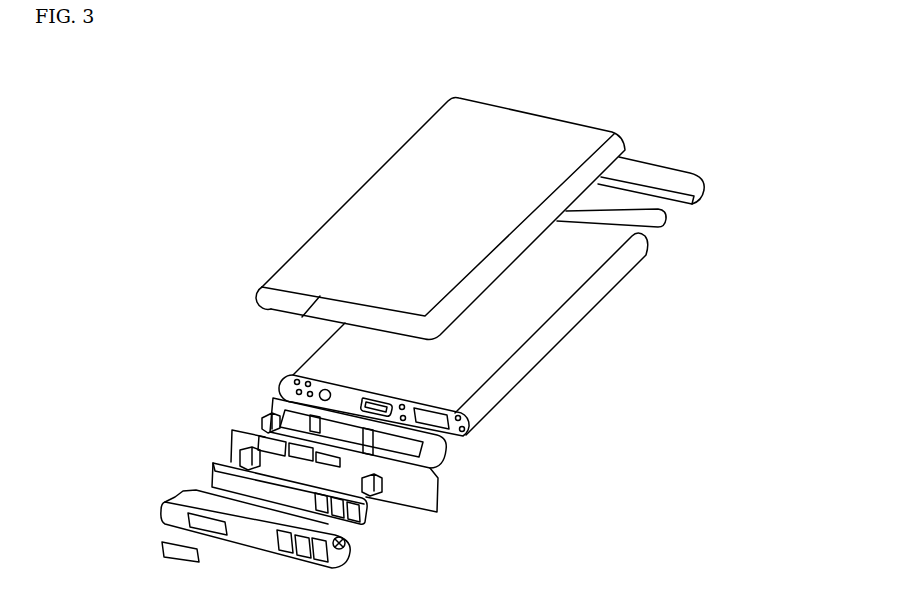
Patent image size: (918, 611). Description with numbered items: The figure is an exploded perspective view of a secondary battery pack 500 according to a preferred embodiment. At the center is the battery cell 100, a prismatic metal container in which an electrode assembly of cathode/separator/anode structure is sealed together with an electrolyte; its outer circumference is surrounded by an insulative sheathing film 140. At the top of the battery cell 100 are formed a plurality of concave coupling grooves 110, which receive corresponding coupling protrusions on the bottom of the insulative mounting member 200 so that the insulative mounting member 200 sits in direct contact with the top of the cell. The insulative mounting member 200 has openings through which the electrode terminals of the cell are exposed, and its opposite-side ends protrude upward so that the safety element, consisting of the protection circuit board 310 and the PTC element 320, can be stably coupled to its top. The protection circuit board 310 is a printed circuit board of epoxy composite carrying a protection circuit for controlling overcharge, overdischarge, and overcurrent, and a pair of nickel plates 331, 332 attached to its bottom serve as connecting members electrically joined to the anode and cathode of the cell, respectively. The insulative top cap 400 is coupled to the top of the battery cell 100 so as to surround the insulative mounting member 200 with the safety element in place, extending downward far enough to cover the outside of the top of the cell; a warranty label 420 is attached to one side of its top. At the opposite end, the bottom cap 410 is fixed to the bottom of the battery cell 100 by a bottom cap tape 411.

The secondary battery pack 500 is at (97, 99).
The sheathing film 140 is at (337, 212).
The bottom cap 410 is at (657, 163).
The bottom cap tape 411 is at (667, 222).
The battery cell 100 is at (564, 338).
The coupling grooves 110 is at (474, 433).
The positive temperature coefficient (PTC) element 320 is at (262, 420).
The insulative mounting member 200 is at (442, 470).
The nickel plate 331 is at (244, 452).
The nickel plate 332 is at (384, 489).
The protection circuit board 310 is at (352, 522).
The insulative top cap 400 is at (165, 512).
The warranty label 420 is at (161, 548).